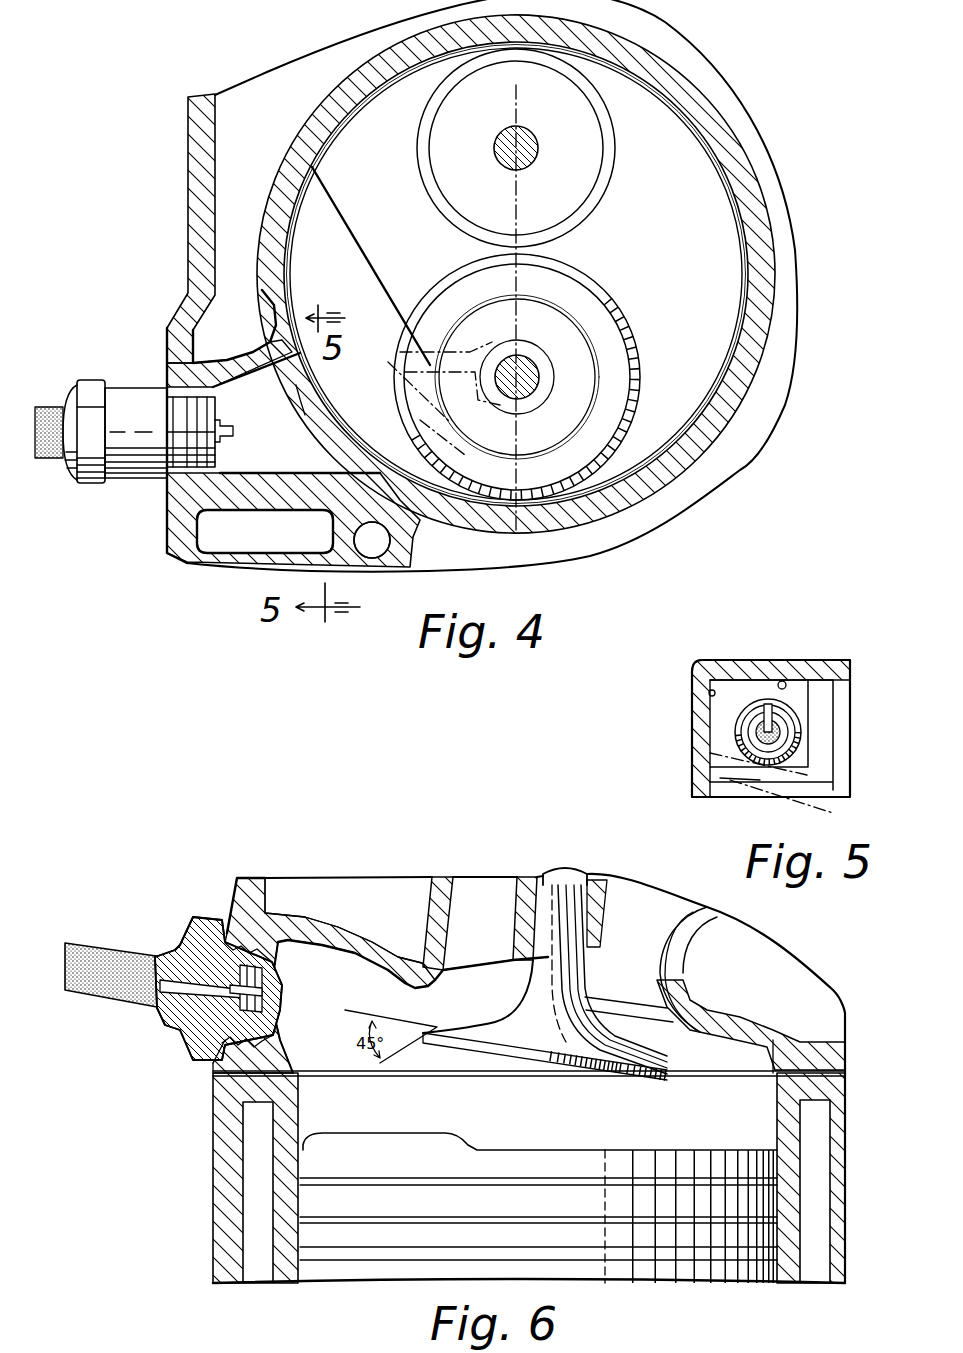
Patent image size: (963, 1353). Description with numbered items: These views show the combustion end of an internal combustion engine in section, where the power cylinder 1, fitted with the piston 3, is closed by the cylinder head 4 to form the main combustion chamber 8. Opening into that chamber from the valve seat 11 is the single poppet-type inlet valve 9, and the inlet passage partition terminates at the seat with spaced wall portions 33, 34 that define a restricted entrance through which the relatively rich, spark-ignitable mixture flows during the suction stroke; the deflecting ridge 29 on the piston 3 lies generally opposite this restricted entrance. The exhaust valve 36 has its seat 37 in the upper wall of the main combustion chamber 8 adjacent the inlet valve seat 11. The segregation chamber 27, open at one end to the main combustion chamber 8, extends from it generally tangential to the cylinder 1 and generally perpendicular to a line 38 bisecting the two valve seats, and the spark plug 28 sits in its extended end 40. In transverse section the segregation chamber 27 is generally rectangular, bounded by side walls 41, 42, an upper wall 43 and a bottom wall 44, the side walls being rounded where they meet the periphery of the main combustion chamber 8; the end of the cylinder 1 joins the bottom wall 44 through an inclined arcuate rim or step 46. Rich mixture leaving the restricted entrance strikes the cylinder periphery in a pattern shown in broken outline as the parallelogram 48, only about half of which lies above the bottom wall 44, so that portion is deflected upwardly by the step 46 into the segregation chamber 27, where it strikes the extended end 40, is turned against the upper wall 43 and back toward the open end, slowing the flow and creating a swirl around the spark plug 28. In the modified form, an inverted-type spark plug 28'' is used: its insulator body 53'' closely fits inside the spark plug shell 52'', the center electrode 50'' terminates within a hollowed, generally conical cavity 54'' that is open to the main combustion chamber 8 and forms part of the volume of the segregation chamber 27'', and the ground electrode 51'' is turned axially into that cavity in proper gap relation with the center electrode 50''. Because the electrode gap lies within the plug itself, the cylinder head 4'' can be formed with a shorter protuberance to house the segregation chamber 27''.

In FIG. 4, the power cylinder 1 is at (735, 330).
In FIG. 6, the piston 3 is at (600, 1167).
In FIG. 4, the cylinder head 4 is at (165, 228).
In FIG. 4, the main combustion chamber 8 is at (722, 218).
In FIG. 6, the main combustion chamber 8 is at (717, 1050).
In FIG. 6, the inlet valve 9 is at (557, 980).
In FIG. 4, the valve seat 11 is at (630, 350).
In FIG. 4, the segregation chamber 27 is at (293, 447).
In FIG. 5, the segregation chamber 27 is at (754, 701).
In FIG. 4, the spark plug 28 is at (134, 407).
In FIG. 5, the spark plug 28 is at (817, 732).
In FIG. 4, the deflecting ridge 29 is at (370, 285).
In FIG. 6, the deflecting ridge 29 is at (400, 1142).
In FIG. 4, the wall portion 33 is at (495, 356).
In FIG. 6, the wall portion 33 is at (480, 917).
In FIG. 4, the wall portion 34 is at (470, 412).
In FIG. 4, the exhaust valve 36 is at (568, 152).
In FIG. 4, the exhaust valve seat 37 is at (600, 195).
In FIG. 4, the bisecting line 38 is at (512, 108).
In FIG. 4, the extended end 40 is at (222, 480).
In FIG. 4, the side wall 41 is at (238, 402).
In FIG. 5, the side wall 41 is at (815, 695).
In FIG. 4, the side wall 42 is at (298, 490).
In FIG. 5, the side wall 42 is at (710, 697).
In FIG. 5, the upper wall 43 is at (782, 682).
In FIG. 5, the bottom wall 44 is at (710, 757).
In FIG. 4, the inclined arcuate rim or step 46 is at (305, 415).
In FIG. 5, the inclined arcuate rim or step 46 is at (720, 778).
In FIG. 5, the rich mixture flow pattern 48 is at (763, 800).
In FIG. 6, the cylinder head 4'' is at (324, 948).
In FIG. 6, the inverted-type spark plug 28'' is at (114, 944).
In FIG. 6, the insulator body 53'' is at (343, 920).
In FIG. 6, the segregation chamber 27'' is at (409, 980).
In FIG. 6, the conical cavity 54'' is at (296, 985).
In FIG. 6, the center electrode 50'' is at (199, 988).
In FIG. 6, the ground electrode 51'' is at (283, 1014).
In FIG. 6, the spark plug shell 52'' is at (192, 1071).